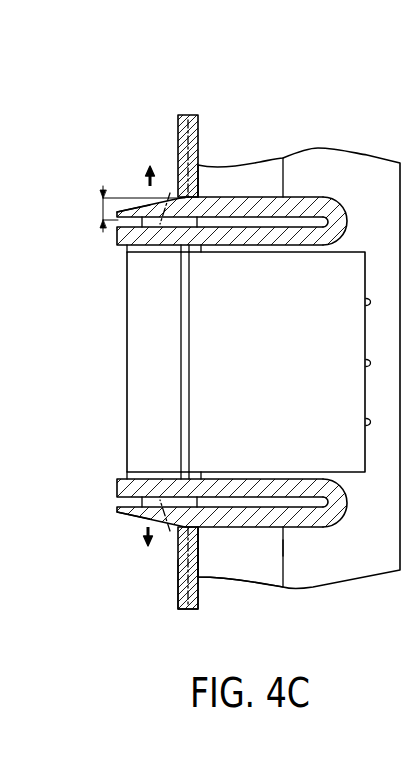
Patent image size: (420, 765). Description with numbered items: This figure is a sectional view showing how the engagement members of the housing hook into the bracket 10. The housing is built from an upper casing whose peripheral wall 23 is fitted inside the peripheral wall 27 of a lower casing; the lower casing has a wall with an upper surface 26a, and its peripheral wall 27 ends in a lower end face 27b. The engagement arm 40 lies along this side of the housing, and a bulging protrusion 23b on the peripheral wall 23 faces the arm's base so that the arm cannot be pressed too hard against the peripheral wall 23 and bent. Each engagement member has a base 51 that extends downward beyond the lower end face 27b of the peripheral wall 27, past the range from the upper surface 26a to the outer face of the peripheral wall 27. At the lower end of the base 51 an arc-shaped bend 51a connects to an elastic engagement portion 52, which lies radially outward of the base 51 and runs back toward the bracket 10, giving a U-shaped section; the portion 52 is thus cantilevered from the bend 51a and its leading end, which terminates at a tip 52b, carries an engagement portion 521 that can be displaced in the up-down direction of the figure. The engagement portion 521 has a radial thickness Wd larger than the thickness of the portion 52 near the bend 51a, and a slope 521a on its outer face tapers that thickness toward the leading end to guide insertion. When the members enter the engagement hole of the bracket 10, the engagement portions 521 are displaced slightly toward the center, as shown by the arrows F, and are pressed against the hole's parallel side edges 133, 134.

The bracket 10 is at (191, 116).
The peripheral wall 23 is at (315, 573).
The bulging protrusion 23b is at (366, 302).
The upper surface 26a is at (188, 570).
The peripheral wall 27 is at (259, 572).
The lower end face 27b is at (294, 545).
The engagement arm 40 is at (124, 348).
The base 51 is at (268, 236).
The bend 51a is at (334, 215).
The elastic engagement portion 52 is at (236, 207).
The strip tip 52b is at (118, 528).
The engagement portion 521 is at (187, 210).
The slope 521a is at (142, 204).
The side edge 133 is at (170, 193).
The side edge 134 is at (177, 531).
The arrows F is at (148, 182).
The thickness Wd is at (123, 209).